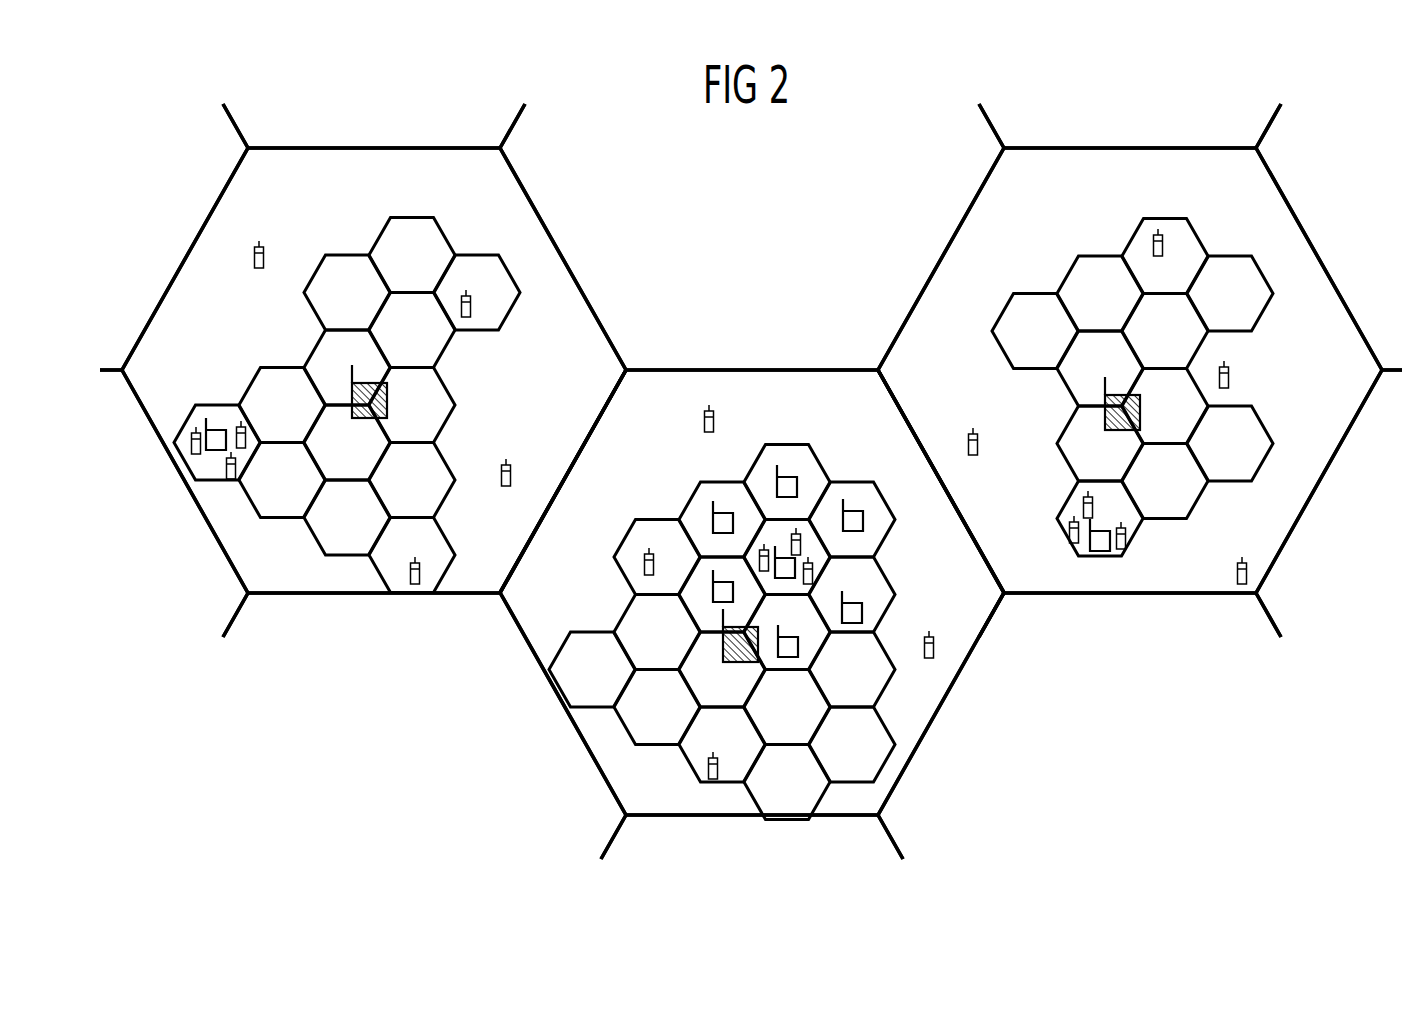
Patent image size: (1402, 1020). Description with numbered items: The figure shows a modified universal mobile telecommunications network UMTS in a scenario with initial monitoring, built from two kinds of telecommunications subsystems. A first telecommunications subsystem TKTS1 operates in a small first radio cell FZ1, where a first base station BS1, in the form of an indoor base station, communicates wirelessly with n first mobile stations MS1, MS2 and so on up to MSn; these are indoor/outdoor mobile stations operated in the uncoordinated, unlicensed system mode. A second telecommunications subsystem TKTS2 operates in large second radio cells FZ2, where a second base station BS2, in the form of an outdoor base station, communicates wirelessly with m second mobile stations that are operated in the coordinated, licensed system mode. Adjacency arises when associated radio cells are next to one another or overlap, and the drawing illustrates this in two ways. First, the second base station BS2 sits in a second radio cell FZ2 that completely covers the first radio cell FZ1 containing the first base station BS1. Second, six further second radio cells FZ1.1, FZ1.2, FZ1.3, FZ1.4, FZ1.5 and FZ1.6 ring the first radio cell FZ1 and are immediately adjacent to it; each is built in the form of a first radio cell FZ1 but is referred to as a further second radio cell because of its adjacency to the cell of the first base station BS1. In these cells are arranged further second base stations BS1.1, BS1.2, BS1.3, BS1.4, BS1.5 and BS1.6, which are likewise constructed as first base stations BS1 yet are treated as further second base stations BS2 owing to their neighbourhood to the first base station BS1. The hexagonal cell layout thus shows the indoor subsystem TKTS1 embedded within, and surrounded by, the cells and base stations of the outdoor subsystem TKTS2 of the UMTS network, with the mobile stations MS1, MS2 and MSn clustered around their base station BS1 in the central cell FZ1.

The first radio cell FZ1 is at (412, 227).
The second radio cell FZ2 is at (520, 228).
The further second radio cell FZ1.1 is at (875, 540).
The further second radio cell FZ1.2 is at (878, 625).
The further second radio cell FZ1.3 is at (790, 662).
The further second radio cell FZ1.4 is at (688, 616).
The further second radio cell FZ1.5 is at (693, 503).
The further second radio cell FZ1.6 is at (752, 455).
The first base station BS1 is at (206, 418).
The further second base station BS1.1 is at (853, 511).
The further second base station BS1.2 is at (862, 608).
The further second base station BS1.3 is at (799, 647).
The further second base station BS1.4 is at (712, 592).
The further second base station BS1.5 is at (712, 518).
The further second base station BS1.6 is at (789, 477).
The second base station BS2 is at (388, 402).
The first mobile station MS1 is at (194, 430).
The first mobile station MS2 is at (284, 417).
The first mobile station MSn is at (237, 468).
The first telecommunications subsystem TKTS1 is at (169, 487).
The second telecommunications subsystem TKTS2 is at (312, 612).
The universal mobile telecommunications system UMTS is at (1138, 760).